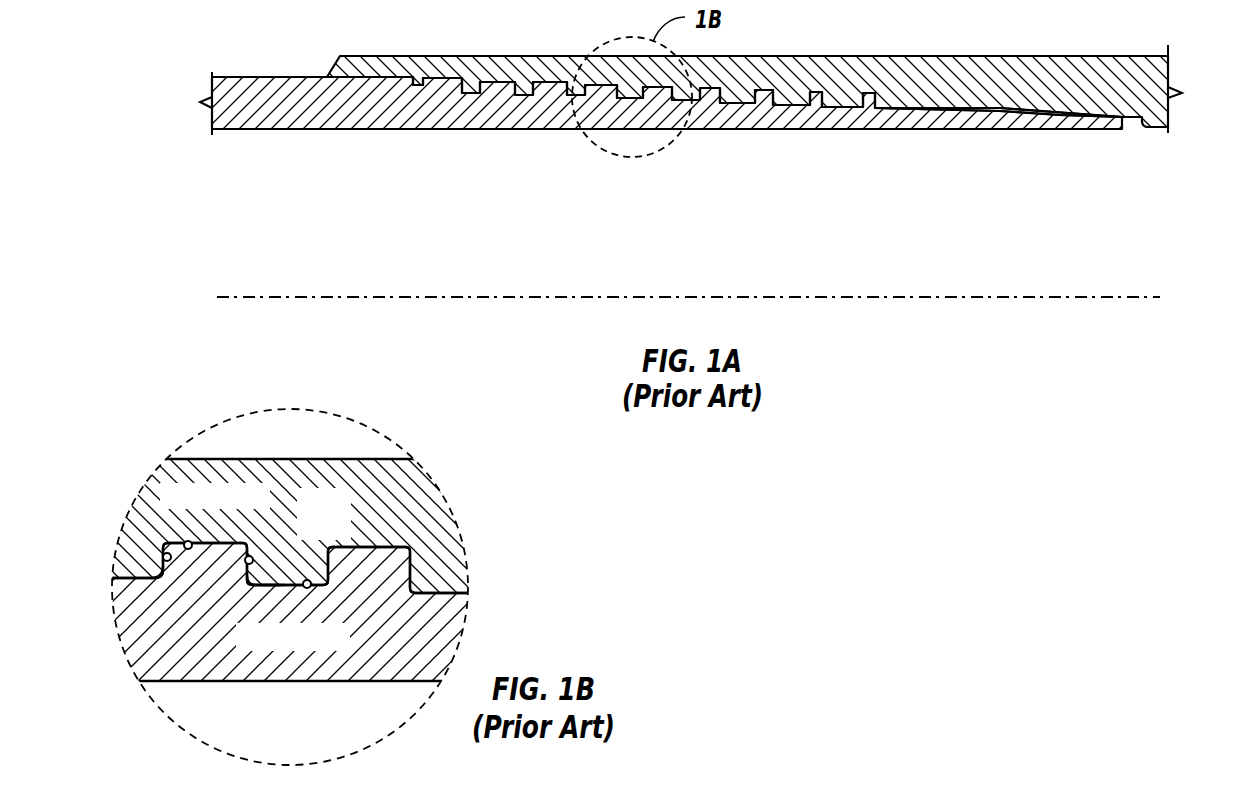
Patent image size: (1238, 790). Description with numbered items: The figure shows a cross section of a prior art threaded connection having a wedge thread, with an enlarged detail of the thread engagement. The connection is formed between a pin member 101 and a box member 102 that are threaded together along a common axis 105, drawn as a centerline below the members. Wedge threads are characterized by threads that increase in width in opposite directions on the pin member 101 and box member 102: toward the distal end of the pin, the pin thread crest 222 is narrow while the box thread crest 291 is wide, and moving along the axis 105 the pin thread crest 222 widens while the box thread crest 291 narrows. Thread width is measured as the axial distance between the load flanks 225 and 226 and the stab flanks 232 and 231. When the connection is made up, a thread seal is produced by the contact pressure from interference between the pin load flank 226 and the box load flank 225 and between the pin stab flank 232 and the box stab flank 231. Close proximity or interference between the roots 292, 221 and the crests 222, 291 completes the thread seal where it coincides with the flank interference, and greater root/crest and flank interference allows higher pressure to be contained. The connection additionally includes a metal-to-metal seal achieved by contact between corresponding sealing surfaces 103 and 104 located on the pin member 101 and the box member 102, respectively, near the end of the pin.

In FIG. 1A, the pin member 101 is at (303, 112).
In FIG. 1B, the pin member 101 is at (195, 650).
In FIG. 1A, the box member 102 is at (981, 90).
In FIG. 1B, the box member 102 is at (402, 502).
In FIG. 1A, the sealing surface 103 is at (1032, 112).
In FIG. 1A, the sealing surface 104 is at (1062, 117).
In FIG. 1A, the axis 105 is at (1010, 296).
In FIG. 1B, the root 221 is at (190, 540).
In FIG. 1B, the pin thread crest 222 is at (248, 557).
In FIG. 1B, the box load flank 225 is at (163, 567).
In FIG. 1B, the pin load flank 226 is at (162, 571).
In FIG. 1B, the box stab flank 231 is at (266, 584).
In FIG. 1B, the pin stab flank 232 is at (252, 570).
In FIG. 1B, the box thread crest 291 is at (273, 588).
In FIG. 1B, the root 292 is at (309, 588).